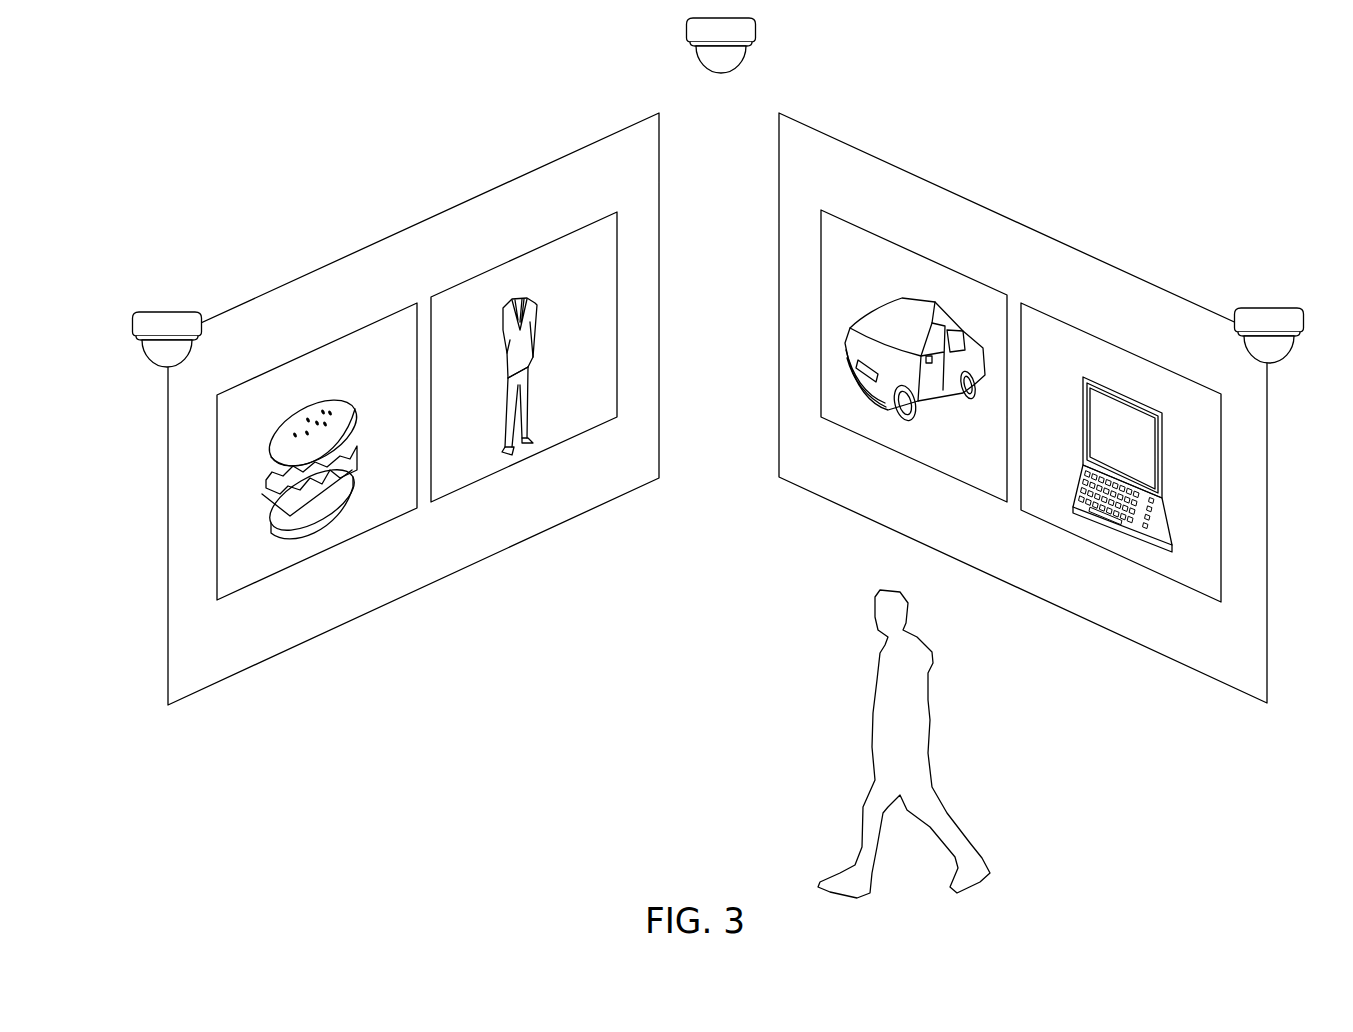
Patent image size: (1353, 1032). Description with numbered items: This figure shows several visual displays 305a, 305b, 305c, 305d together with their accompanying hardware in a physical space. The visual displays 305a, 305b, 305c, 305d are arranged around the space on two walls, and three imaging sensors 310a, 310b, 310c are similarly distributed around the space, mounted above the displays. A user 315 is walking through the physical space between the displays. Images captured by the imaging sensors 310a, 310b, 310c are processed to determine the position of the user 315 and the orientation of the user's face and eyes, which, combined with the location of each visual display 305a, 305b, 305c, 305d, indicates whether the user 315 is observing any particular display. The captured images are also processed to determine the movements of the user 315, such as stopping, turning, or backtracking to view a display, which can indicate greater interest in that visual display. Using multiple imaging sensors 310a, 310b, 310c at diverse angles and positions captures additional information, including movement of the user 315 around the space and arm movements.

The visual display 305a is at (328, 338).
The visual display 305b is at (530, 247).
The visual display 305c is at (908, 248).
The visual display 305d is at (1107, 338).
The imaging sensor 310a is at (167, 308).
The imaging sensor 310b is at (757, 30).
The imaging sensor 310c is at (1267, 307).
The user 315 is at (930, 707).